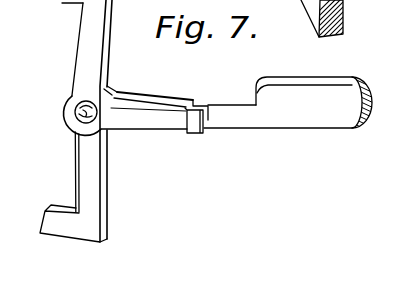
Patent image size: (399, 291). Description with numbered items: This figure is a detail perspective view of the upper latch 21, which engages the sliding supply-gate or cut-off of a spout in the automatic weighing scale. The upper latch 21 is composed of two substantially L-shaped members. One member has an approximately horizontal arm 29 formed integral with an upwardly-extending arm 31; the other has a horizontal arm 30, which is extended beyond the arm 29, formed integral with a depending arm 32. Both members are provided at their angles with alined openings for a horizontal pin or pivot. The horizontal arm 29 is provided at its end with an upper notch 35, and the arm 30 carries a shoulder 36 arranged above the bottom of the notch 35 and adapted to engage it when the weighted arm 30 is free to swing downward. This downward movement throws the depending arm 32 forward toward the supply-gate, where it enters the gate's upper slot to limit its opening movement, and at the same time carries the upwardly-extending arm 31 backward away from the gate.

The upper latch 21 is at (148, 80).
The horizontal arm 29 is at (160, 127).
The horizontal arm 30 is at (303, 120).
The upwardly-extending arm 31 is at (84, 51).
The depending arm 32 is at (108, 190).
The upper notch 35 is at (198, 123).
The shoulder 36 is at (205, 109).